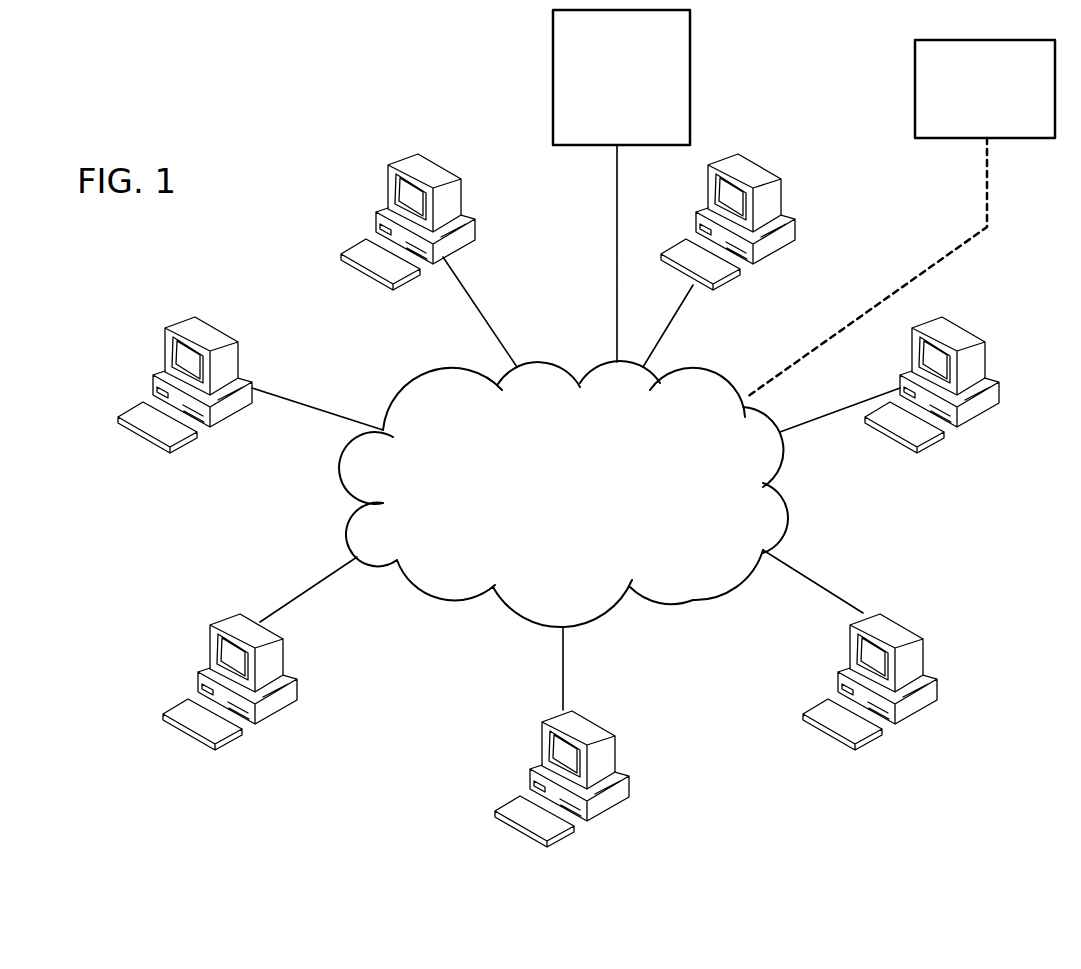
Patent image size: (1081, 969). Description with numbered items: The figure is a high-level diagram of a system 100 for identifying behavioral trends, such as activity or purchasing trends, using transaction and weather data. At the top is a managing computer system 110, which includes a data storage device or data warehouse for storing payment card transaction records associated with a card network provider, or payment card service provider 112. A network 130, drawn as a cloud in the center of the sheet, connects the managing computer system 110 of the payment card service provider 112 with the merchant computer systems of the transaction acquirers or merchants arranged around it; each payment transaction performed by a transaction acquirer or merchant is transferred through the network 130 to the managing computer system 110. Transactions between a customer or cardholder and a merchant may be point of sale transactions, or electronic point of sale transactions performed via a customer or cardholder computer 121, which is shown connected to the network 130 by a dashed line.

The system 100 is at (325, 84).
The managing computer system 110 is at (652, 75).
The payment card service provider 112 is at (647, 37).
The cardholder computer 121 is at (910, 82).
The network 130 is at (693, 603).